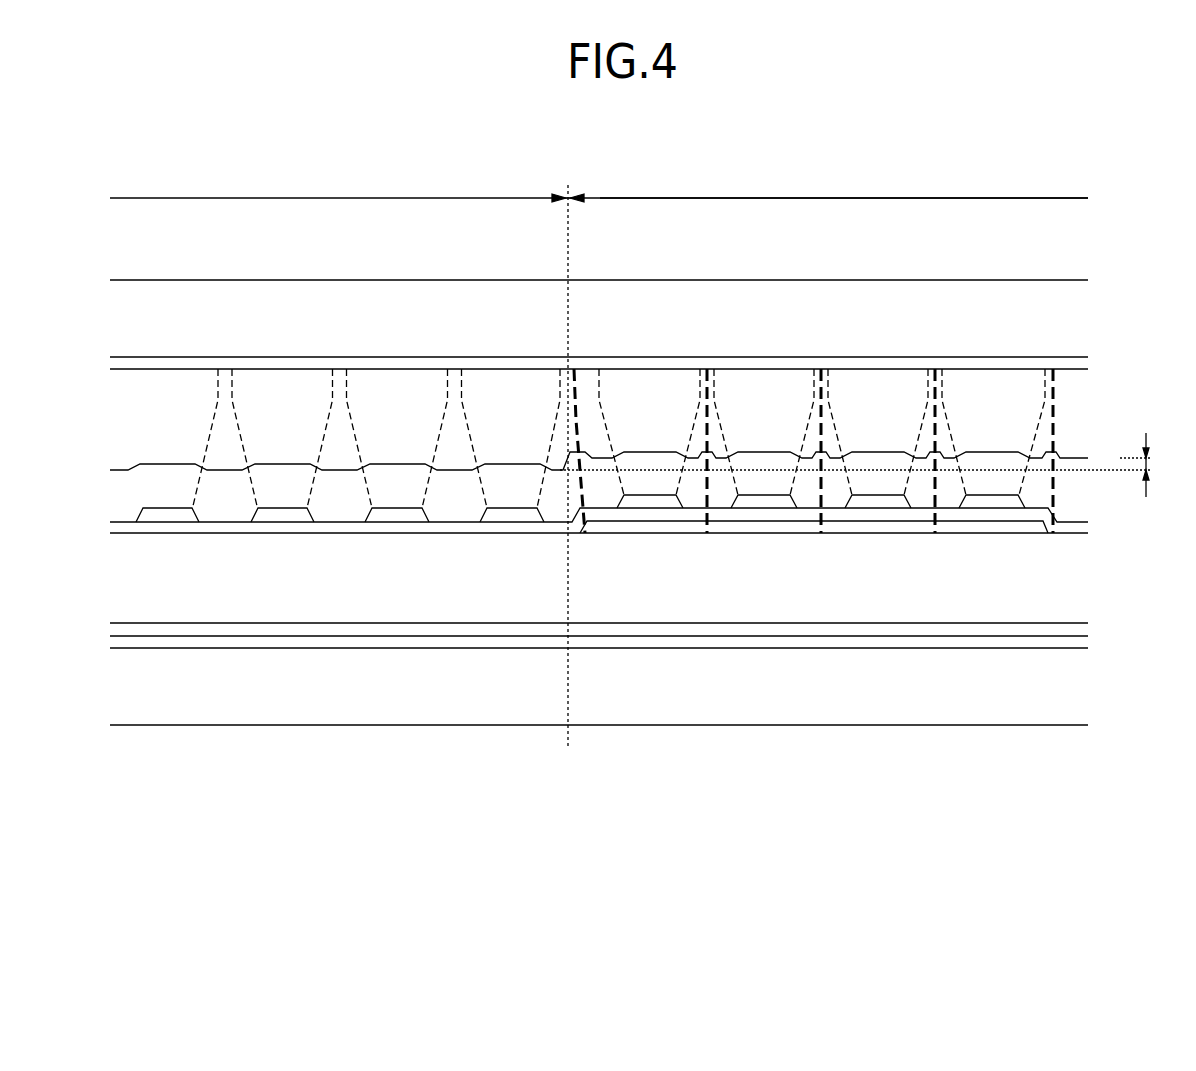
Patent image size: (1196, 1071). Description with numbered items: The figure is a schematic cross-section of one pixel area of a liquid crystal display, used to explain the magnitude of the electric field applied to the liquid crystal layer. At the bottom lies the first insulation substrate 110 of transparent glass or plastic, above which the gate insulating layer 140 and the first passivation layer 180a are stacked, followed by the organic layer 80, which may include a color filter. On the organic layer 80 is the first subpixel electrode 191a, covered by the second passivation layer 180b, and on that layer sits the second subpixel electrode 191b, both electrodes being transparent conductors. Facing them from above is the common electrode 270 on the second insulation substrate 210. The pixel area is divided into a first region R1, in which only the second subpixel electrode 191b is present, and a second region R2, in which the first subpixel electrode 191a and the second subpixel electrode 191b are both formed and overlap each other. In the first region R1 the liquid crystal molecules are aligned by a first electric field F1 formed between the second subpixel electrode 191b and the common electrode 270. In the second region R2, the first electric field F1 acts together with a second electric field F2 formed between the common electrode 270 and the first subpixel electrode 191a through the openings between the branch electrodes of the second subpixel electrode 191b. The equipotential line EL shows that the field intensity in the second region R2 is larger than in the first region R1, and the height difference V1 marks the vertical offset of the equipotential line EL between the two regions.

The first insulation substrate 110 is at (975, 697).
The gate insulating layer 140 is at (868, 642).
The organic layer 80 is at (497, 598).
The first passivation layer 180a is at (642, 628).
The second passivation layer 180b is at (383, 527).
The first subpixel electrode 191a is at (770, 527).
The second subpixel electrode 191b is at (278, 515).
The second insulation substrate 210 is at (797, 303).
The common electrode 270 is at (873, 367).
The first electric field F1 is at (217, 407).
The second electric field F2 is at (575, 407).
The first region R1 is at (599, 454).
The second region R2 is at (844, 179).
The equipotential line EL is at (1070, 452).
The height difference V1 is at (1161, 465).